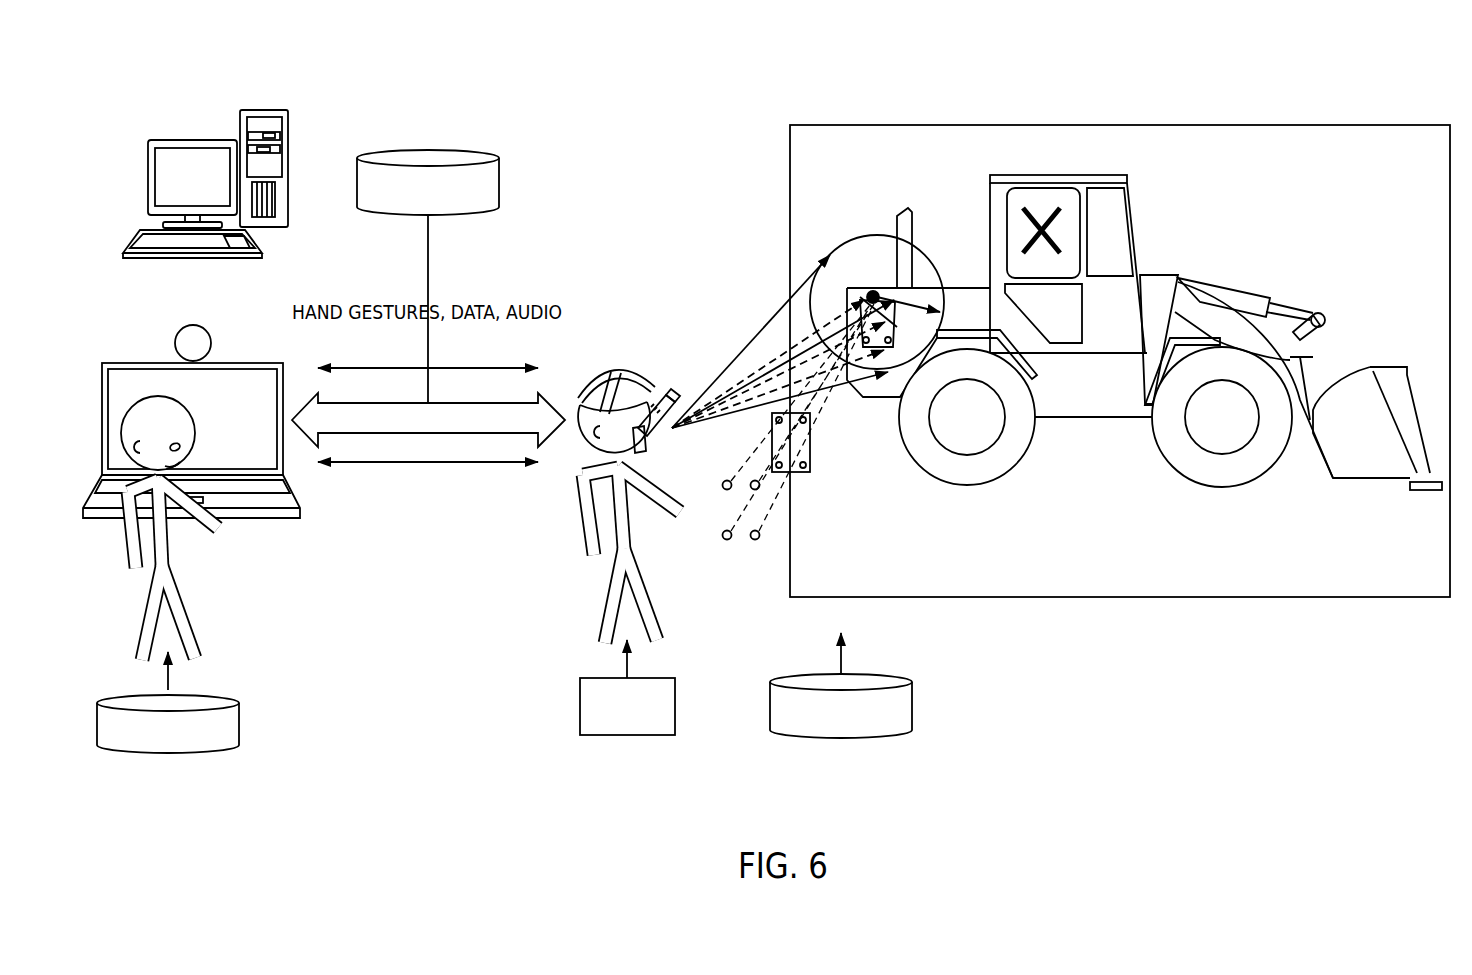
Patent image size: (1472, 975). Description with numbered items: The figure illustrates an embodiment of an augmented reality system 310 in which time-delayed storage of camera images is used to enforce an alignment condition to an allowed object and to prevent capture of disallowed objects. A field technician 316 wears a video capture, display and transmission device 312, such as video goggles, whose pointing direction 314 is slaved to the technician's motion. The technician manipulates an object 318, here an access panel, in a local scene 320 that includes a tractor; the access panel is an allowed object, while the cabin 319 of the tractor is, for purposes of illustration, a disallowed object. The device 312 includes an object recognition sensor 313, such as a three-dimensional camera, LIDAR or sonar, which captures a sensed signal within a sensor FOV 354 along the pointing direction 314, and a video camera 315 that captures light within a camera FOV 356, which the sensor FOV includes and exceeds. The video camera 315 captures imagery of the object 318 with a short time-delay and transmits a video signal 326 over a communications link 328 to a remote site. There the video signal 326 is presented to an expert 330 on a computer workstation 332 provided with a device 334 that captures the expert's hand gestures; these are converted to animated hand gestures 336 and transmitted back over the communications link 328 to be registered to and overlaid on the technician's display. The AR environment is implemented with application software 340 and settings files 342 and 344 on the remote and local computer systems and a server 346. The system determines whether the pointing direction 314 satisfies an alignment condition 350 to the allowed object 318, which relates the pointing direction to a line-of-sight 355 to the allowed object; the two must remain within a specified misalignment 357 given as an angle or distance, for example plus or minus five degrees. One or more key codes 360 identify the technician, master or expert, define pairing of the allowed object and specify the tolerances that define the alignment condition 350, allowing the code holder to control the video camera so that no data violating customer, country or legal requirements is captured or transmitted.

The AR system 310 is at (1335, 62).
The video capture, display and transmission device 312 is at (617, 375).
The object recognition sensor 313 is at (670, 407).
The pointing direction 314 is at (745, 400).
The video camera 315 is at (660, 430).
The field technician 316 is at (582, 507).
The object 318 is at (812, 443).
The cabin 319 is at (1058, 173).
The local scene 320 is at (1125, 125).
The video signal 326 is at (428, 502).
The communications link 328 is at (428, 403).
The expert 330 is at (177, 576).
The computer workstation 332 is at (155, 362).
The device 334 is at (197, 323).
The animated hand gestures 336 is at (433, 292).
The application software 340 is at (499, 181).
The settings file 342 is at (240, 725).
The settings file 344 is at (915, 705).
The server 346 is at (190, 140).
The alignment condition 350 is at (880, 235).
The sensor FOV 354 is at (720, 365).
The line-of-sight 355 is at (813, 335).
The camera FOV 356 is at (768, 352).
The misalignment 357 is at (933, 312).
The key code 360 is at (475, 340).